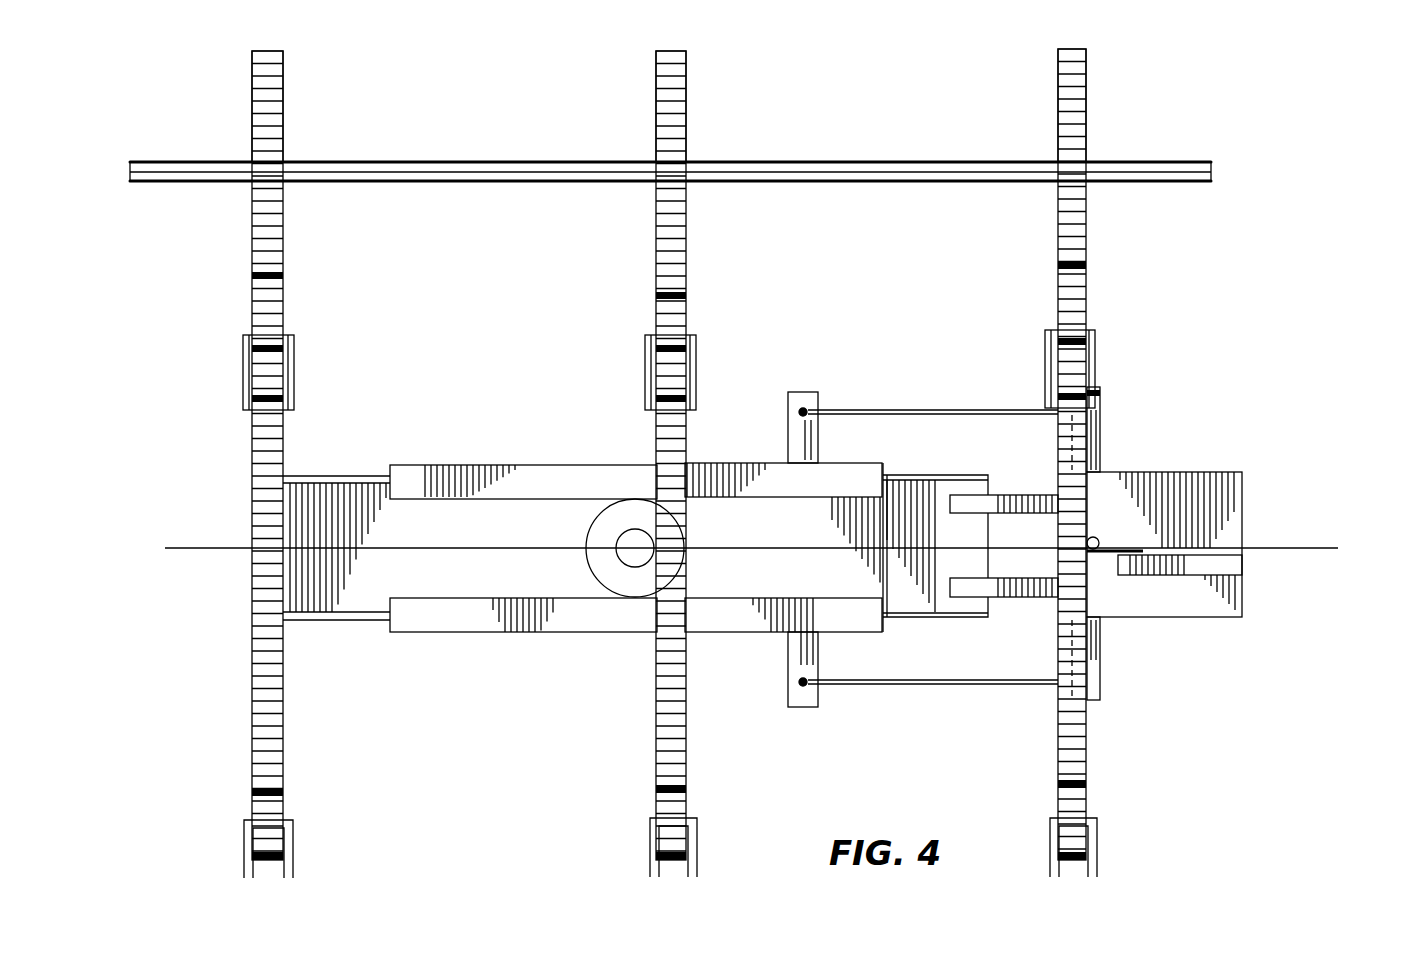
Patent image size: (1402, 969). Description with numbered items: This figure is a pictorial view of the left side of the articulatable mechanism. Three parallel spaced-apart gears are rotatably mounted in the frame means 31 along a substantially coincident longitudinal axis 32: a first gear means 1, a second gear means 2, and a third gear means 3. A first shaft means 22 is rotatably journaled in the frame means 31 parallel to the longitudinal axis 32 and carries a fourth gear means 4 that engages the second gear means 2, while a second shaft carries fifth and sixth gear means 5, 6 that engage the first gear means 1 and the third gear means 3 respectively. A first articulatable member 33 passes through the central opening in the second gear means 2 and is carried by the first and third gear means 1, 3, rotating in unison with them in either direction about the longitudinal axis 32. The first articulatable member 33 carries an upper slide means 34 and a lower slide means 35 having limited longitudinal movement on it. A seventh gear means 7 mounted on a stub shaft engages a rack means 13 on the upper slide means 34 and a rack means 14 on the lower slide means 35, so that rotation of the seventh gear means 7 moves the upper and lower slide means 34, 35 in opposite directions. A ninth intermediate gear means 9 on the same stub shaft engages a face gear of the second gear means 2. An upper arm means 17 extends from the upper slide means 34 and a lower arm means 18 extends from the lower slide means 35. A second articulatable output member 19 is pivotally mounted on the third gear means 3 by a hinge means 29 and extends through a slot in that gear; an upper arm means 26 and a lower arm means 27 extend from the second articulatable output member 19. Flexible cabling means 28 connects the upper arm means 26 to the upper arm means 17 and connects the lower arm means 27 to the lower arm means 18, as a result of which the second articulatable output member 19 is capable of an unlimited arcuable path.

The first gear means 1 is at (252, 712).
The second gear means 2 is at (657, 745).
The third gear means 3 is at (1058, 745).
The fourth gear means 4 is at (686, 105).
The fifth gear means 5 is at (283, 107).
The sixth gear means 6 is at (1087, 105).
The seventh gear means 7 is at (620, 585).
The ninth intermediate gear means 9 is at (641, 570).
The rack means 13 is at (732, 598).
The rack means 14 is at (738, 500).
The upper arm means 17 is at (795, 436).
The lower arm means 18 is at (797, 676).
The second articulatable output member 19 is at (1180, 505).
The first shaft means 22 is at (932, 160).
The upper arm means 26 is at (1096, 450).
The lower arm means 27 is at (1100, 680).
The flexible cabling means 28 is at (965, 410).
The hinge means 29 is at (1105, 570).
The frame means 31 is at (270, 382).
The longitudinal axis 32 is at (207, 548).
The first articulatable member 33 is at (334, 568).
The upper slide means 34 is at (530, 464).
The lower slide means 35 is at (547, 632).